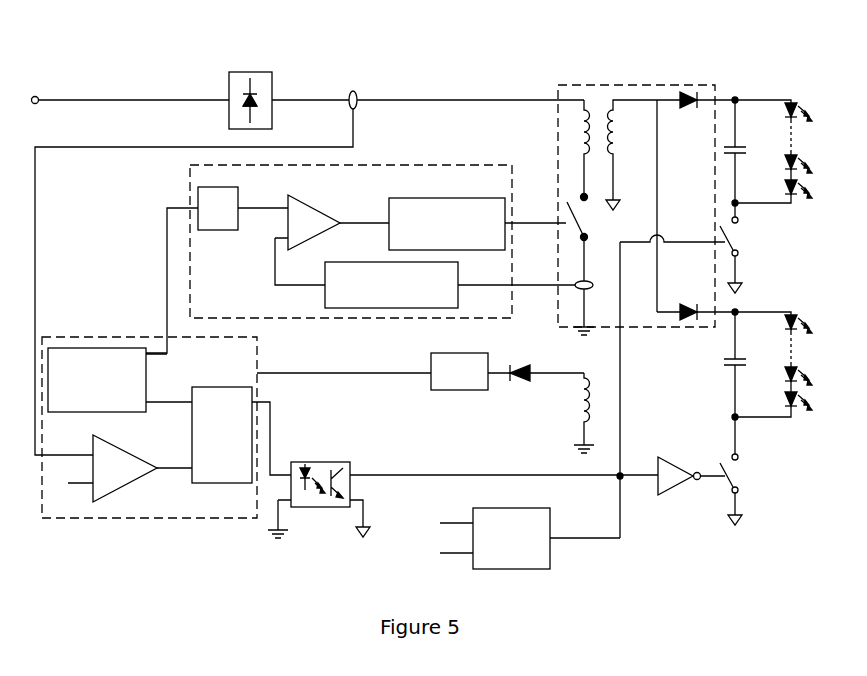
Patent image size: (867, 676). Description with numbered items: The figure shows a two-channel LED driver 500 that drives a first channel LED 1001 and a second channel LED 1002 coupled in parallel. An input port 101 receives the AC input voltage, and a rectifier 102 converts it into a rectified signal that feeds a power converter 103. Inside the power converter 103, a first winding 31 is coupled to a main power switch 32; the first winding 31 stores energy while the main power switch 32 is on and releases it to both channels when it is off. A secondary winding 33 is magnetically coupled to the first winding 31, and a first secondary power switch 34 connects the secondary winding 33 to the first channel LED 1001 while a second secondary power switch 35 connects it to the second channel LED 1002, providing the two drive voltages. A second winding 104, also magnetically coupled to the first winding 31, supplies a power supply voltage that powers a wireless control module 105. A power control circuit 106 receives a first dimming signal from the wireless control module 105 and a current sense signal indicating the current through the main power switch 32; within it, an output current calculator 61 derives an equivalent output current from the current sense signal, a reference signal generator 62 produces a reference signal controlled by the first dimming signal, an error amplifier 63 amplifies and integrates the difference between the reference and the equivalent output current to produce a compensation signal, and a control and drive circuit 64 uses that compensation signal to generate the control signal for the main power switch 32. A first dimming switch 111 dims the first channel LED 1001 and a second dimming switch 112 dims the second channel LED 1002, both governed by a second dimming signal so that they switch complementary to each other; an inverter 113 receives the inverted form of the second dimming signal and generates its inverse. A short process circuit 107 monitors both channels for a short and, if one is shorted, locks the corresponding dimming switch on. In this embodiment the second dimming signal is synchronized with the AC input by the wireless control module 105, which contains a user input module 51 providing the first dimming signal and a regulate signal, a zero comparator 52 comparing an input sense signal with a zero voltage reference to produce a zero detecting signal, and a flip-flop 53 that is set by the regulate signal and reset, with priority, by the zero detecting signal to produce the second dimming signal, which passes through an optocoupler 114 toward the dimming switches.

The two-channel LED driver 500 is at (788, 42).
The input port 101 is at (37, 98).
The rectifier 102 is at (222, 115).
The power converter 103 is at (556, 92).
The power control circuit 106 is at (186, 196).
The reference signal generator 62 is at (217, 270).
The error amplifier 63 is at (316, 207).
The control and drive circuit 64 is at (436, 198).
The output current calculator 61 is at (458, 296).
The first winding 31 is at (577, 134).
The secondary winding 33 is at (615, 141).
The main power switch 32 is at (587, 213).
The first secondary power switch 34 is at (688, 106).
The second secondary power switch 35 is at (694, 305).
The first channel LED 1001 is at (784, 157).
The second channel LED 1002 is at (784, 370).
The first dimming switch 111 is at (746, 234).
The second dimming switch 112 is at (746, 470).
The inverter 113 is at (680, 499).
The short process circuit 107 is at (514, 538).
The second winding 104 is at (575, 392).
The wireless control module 105 is at (257, 348).
The user input module 51 is at (158, 388).
The flip-flop 53 is at (251, 435).
The zero comparator 52 is at (119, 468).
The optocoupler 114 is at (332, 462).